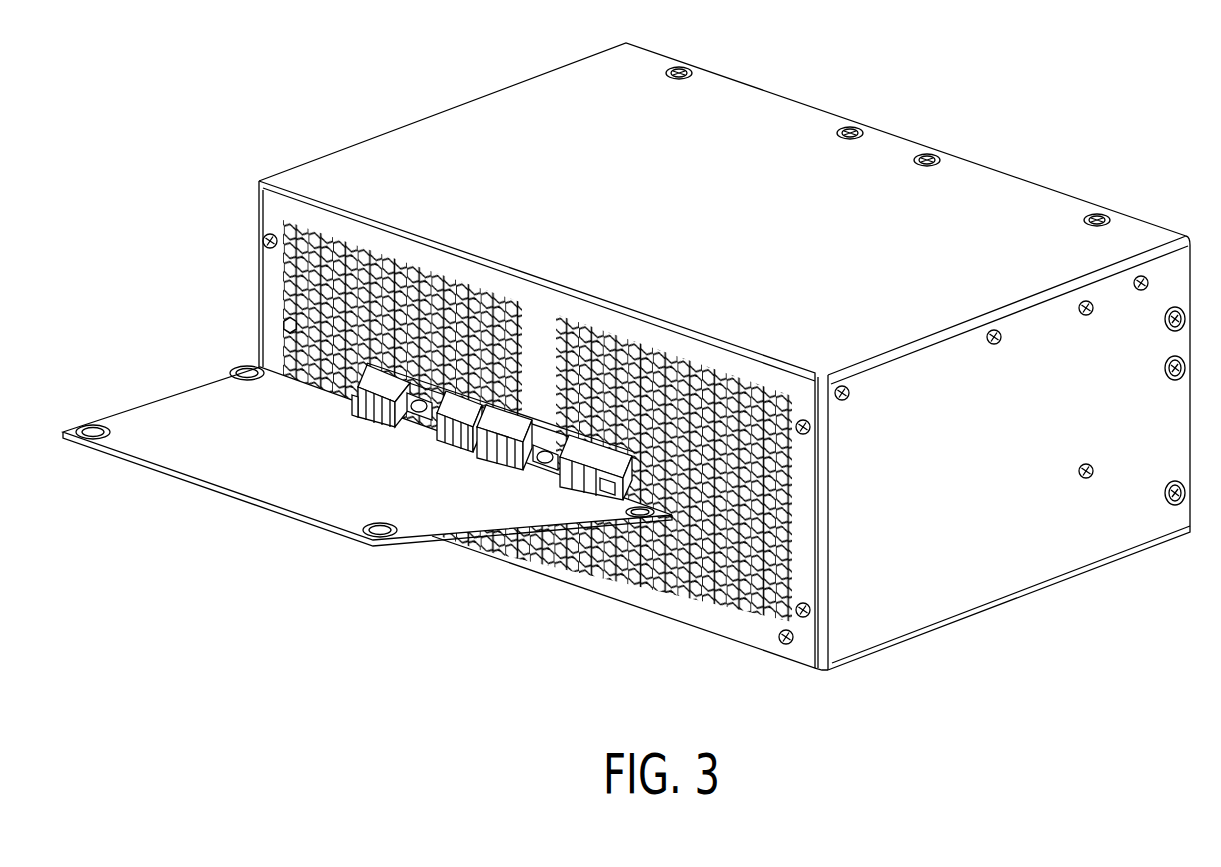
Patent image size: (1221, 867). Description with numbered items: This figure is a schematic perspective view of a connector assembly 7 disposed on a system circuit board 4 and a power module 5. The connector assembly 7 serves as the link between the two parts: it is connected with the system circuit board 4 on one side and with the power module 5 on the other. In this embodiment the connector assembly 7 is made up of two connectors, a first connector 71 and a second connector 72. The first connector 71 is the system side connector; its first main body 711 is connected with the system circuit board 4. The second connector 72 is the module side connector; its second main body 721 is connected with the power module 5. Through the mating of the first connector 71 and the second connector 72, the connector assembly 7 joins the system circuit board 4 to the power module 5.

The system circuit board 4 is at (193, 410).
The power module 5 is at (723, 110).
The connector assembly 7 is at (651, 447).
The first connector 71 is at (790, 618).
The second connector 72 is at (624, 426).
The first main body 711 is at (287, 322).
The second main body 721 is at (263, 241).